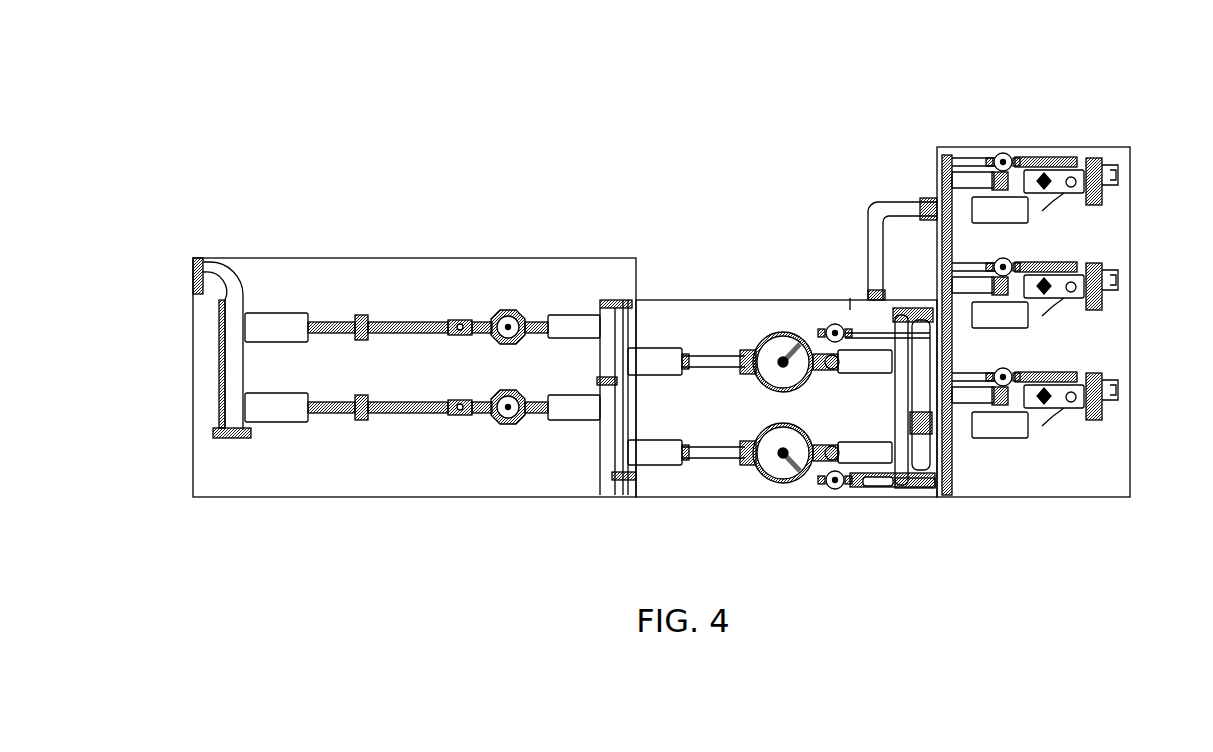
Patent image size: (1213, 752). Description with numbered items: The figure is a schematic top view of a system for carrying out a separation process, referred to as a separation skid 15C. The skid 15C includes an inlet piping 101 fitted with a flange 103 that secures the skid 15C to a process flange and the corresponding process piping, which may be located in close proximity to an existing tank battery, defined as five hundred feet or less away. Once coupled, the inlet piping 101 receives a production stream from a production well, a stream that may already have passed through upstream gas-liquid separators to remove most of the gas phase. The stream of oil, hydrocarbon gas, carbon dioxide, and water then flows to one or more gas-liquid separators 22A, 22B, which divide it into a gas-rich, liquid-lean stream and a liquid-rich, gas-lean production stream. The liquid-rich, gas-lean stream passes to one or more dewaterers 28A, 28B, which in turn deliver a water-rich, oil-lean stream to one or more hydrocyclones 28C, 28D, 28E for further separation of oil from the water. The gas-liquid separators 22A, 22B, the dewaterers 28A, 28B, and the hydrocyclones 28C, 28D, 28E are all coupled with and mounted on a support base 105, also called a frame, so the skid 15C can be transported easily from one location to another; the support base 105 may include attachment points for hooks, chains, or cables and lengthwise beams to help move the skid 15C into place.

The separation skid 15C is at (737, 124).
The inlet piping 101 is at (217, 275).
The flange 103 is at (193, 273).
The support base 105 is at (430, 256).
The gas-liquid separator 22A is at (513, 320).
The gas-liquid separator 22B is at (506, 416).
The dewaterer 28A is at (787, 330).
The dewaterer 28B is at (785, 483).
The hydrocyclone 28C is at (1060, 172).
The hydrocyclone 28D is at (1065, 280).
The hydrocyclone 28E is at (1060, 400).